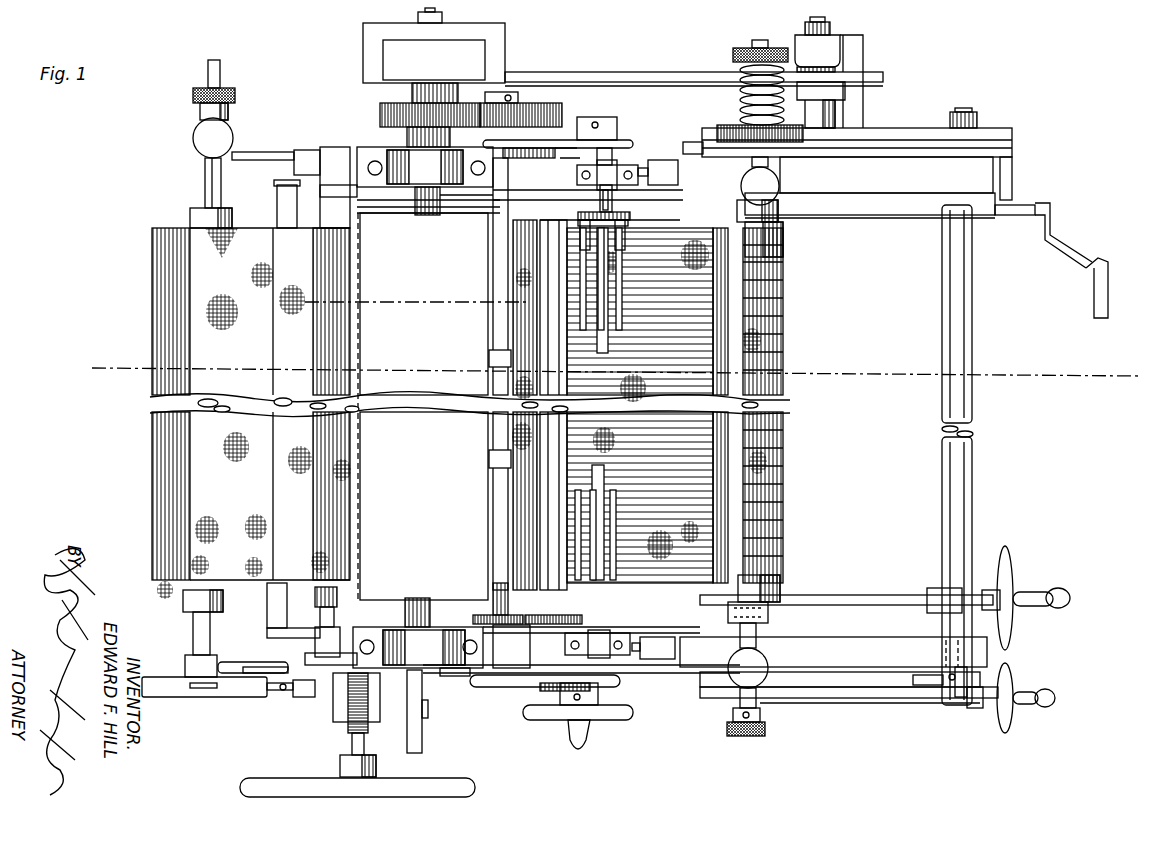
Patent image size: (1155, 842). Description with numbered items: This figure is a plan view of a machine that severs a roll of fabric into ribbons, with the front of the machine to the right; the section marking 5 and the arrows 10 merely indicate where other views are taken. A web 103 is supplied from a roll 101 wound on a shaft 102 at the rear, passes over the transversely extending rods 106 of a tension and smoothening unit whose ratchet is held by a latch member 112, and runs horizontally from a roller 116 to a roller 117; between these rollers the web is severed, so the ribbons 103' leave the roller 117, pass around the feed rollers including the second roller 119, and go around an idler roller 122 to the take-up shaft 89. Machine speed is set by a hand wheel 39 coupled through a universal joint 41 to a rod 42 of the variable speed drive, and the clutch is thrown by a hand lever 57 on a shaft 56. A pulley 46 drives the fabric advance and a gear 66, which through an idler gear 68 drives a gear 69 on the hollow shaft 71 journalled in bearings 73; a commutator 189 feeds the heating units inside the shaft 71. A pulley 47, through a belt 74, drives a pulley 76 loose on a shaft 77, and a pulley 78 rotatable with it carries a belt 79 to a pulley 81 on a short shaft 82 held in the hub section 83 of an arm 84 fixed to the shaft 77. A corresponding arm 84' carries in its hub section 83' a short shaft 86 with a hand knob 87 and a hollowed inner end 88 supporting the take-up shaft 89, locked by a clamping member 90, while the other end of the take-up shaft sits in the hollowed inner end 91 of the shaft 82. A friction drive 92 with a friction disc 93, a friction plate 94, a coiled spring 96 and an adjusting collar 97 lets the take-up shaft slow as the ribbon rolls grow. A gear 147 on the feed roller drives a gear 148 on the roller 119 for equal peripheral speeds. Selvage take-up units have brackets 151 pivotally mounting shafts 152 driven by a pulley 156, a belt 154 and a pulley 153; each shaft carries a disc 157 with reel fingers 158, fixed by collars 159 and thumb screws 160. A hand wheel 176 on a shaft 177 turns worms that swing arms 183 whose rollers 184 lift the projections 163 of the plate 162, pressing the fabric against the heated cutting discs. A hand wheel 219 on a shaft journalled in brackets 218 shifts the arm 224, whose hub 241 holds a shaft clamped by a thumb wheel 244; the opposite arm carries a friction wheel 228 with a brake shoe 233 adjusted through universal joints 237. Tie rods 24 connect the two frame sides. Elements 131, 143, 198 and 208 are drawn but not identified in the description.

The section line 5- 5 is at (108, 345).
The direction arrow 10 is at (330, 283).
The tie rods 24 is at (966, 434).
The hand wheel 39 is at (1045, 594).
The universal joint 41 is at (950, 592).
The rod 42 is at (845, 595).
The pulley 46 is at (883, 73).
The pulley 47 is at (856, 122).
The shaft 56 is at (1020, 212).
The clutch operating hand lever 57 is at (1103, 262).
The gear 66 is at (556, 116).
The idler gear 68 is at (498, 92).
The gear 69 is at (382, 109).
The hollow shaft 71 is at (430, 208).
The bearings 73 is at (423, 407).
The belt 74 is at (905, 134).
The pulley 76 is at (1000, 128).
The shaft 77 is at (960, 298).
The pulley 78 is at (1006, 165).
The belt 79 is at (905, 152).
The pulley 81 is at (703, 145).
The short shaft 82 is at (776, 48).
The hub section 83 is at (775, 181).
The hub section 83' is at (710, 707).
The arm 84 is at (870, 220).
The arm 84' is at (833, 683).
The short shaft 86 is at (768, 700).
The hand knob 87 is at (756, 736).
The hollowed inner end 88 is at (768, 614).
The take-up shaft 89 is at (778, 236).
The clamping member 90 is at (765, 658).
The hollowed inner end 91 is at (740, 211).
The friction drive 92 is at (745, 118).
The friction disc 93 is at (717, 133).
The friction plate 94 is at (722, 126).
The coiled spring 96 is at (746, 62).
The collar 97 is at (741, 48).
The roll 101 is at (150, 450).
The shaft 102 is at (208, 402).
The fabric web 103 is at (228, 404).
The severed fabric or ribbons 103' is at (790, 405).
The rods 106 is at (282, 192).
The latch member 112 is at (258, 664).
The roller 116 is at (320, 400).
The roller 117 is at (520, 600).
The second roller 119 is at (540, 256).
The idler roller 122 is at (735, 306).
The box 131 is at (668, 173).
The handle 143 is at (625, 722).
The gear 147 is at (476, 622).
The gear 148 is at (530, 646).
The brackets 151 is at (579, 177).
The shaft 152 is at (607, 330).
The pulley 153 is at (487, 140).
The belt 154 is at (566, 140).
The pulley 156 is at (613, 137).
The disc 157 is at (628, 218).
The fingers 158 is at (598, 296).
The collars 159 is at (610, 210).
The thumb screws 160 is at (584, 198).
The horizontal plate 162 is at (438, 719).
The horizontal projections 163 is at (420, 745).
The hand wheel 176 is at (482, 768).
The shaft 177 is at (354, 746).
The arms 183 is at (410, 742).
The rollers 184 is at (447, 673).
The commutator 189 is at (468, 58).
The plate 198 is at (376, 210).
The panel 208 is at (442, 477).
The brackets 218 is at (973, 712).
The hand wheel 219 is at (1026, 690).
The arm 224 is at (290, 141).
The friction wheel 228 is at (198, 697).
The brake shoe 233 is at (157, 679).
The universal joints 237 is at (283, 700).
The hub 241 is at (195, 129).
The thumb wheel 244 is at (222, 128).